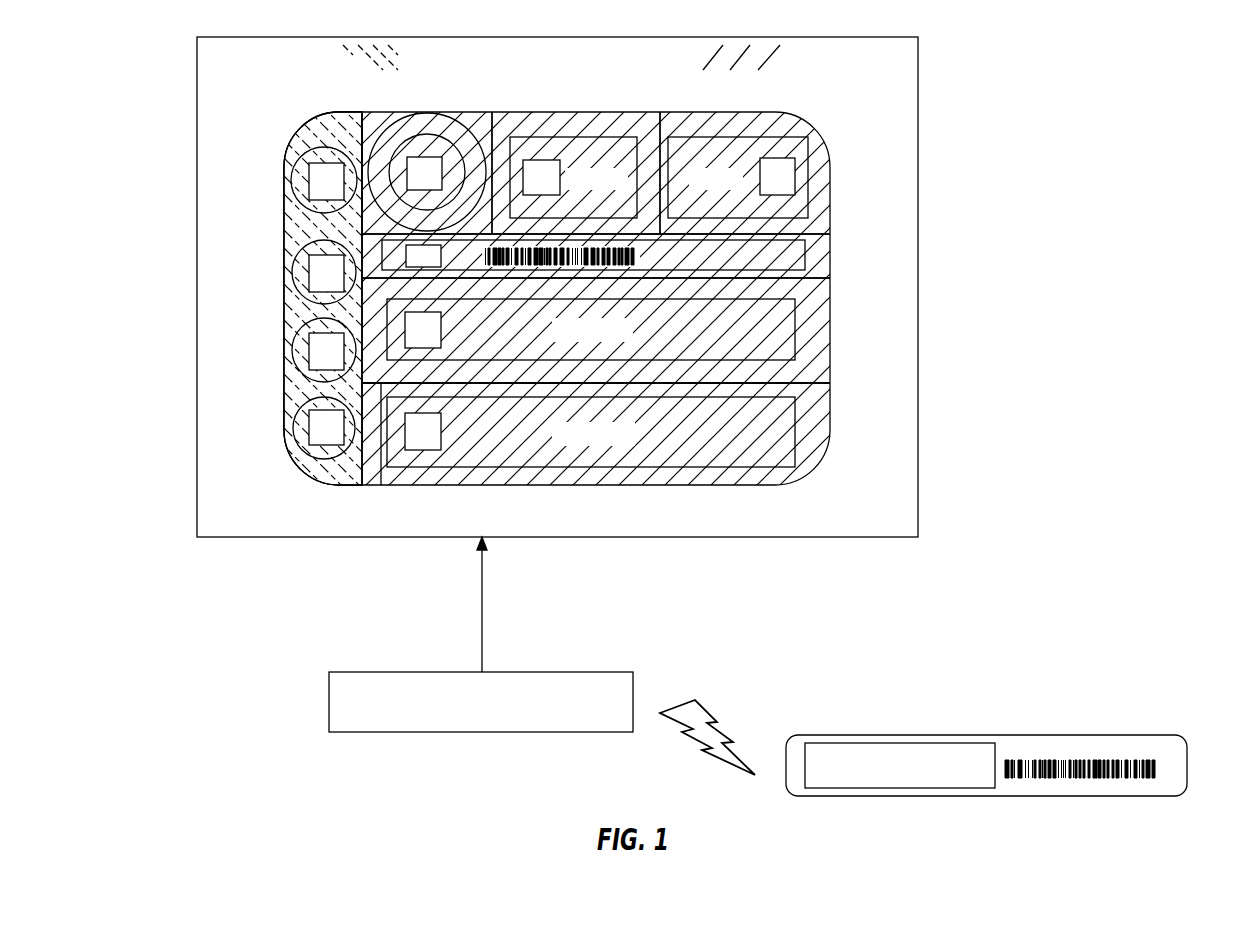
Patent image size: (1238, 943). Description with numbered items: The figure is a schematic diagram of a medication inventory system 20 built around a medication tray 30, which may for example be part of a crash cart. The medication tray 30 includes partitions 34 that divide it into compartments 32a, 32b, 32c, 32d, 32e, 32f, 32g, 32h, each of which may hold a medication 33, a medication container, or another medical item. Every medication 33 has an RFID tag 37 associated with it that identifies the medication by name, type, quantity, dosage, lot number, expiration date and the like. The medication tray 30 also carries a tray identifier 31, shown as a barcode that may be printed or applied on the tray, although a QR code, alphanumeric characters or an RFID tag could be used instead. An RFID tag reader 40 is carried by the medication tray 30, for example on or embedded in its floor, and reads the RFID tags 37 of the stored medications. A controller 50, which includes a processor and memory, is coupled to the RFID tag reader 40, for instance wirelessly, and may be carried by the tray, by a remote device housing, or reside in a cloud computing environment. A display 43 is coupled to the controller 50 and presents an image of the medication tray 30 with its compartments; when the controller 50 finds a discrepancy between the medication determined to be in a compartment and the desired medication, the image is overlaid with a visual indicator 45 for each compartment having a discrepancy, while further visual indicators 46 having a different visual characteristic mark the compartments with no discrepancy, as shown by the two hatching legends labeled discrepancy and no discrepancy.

The medication inventory system 20 is at (1142, 130).
The medication tray 30 is at (1151, 725).
The tray identifier 31 is at (1160, 770).
The compartment 32a is at (297, 154).
The compartment 32b is at (388, 116).
The compartment 32c is at (628, 117).
The compartment 32d is at (788, 120).
The compartment 32e is at (825, 263).
The compartment 32f is at (823, 360).
The compartment 32g is at (822, 417).
The compartment 32h is at (313, 467).
The medication 33 is at (387, 140).
The partition 34 is at (381, 412).
The RFID tag 37 is at (537, 163).
The RFID tag reader 40 is at (830, 783).
The display 43 is at (928, 258).
The visual indicator 45 is at (363, 50).
The further visual indicator 46 is at (747, 50).
The controller 50 is at (378, 745).